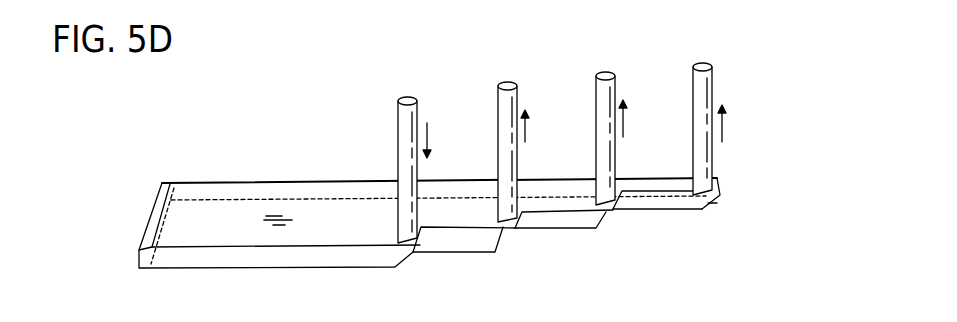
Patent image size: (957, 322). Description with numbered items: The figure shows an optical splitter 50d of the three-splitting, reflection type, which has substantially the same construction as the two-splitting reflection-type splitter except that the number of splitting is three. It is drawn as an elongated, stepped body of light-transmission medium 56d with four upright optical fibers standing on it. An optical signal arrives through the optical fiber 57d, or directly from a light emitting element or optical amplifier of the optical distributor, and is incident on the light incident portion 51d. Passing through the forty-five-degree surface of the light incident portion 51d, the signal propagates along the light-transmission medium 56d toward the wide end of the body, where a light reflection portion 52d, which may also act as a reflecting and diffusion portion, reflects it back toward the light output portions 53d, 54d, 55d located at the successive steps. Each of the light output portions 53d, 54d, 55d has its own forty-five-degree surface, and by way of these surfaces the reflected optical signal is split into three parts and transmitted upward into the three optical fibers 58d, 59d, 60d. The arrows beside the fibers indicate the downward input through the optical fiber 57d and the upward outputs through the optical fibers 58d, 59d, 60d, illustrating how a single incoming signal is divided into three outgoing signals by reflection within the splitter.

The optical splitter 50d is at (362, 76).
The light incident portion 51d is at (413, 253).
The light reflection portion 52d is at (170, 182).
The light output portion 53d is at (512, 232).
The light output portion 54d is at (608, 212).
The light output portion 55d is at (712, 203).
The light-transmission medium 56d is at (222, 182).
The optical fiber 57d is at (398, 138).
The optical fiber 58d is at (498, 105).
The optical fiber 59d is at (596, 100).
The optical fiber 60d is at (693, 97).